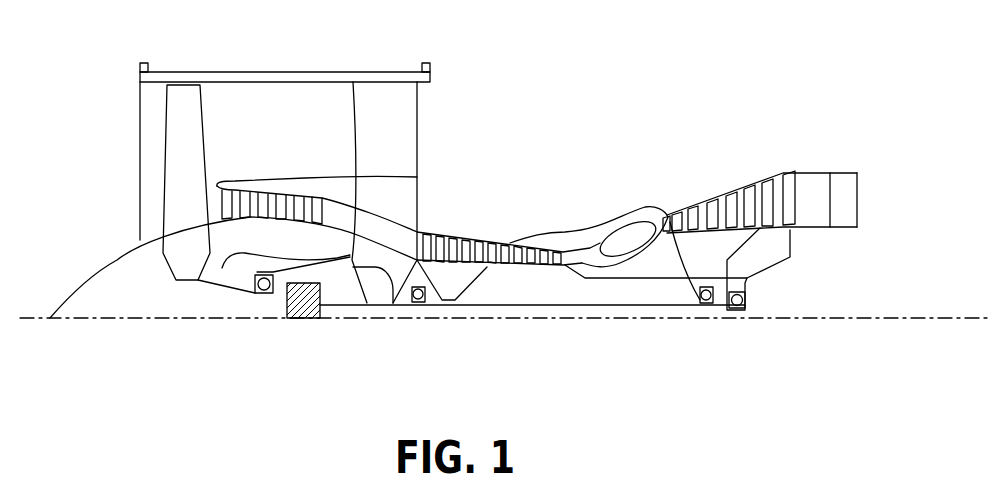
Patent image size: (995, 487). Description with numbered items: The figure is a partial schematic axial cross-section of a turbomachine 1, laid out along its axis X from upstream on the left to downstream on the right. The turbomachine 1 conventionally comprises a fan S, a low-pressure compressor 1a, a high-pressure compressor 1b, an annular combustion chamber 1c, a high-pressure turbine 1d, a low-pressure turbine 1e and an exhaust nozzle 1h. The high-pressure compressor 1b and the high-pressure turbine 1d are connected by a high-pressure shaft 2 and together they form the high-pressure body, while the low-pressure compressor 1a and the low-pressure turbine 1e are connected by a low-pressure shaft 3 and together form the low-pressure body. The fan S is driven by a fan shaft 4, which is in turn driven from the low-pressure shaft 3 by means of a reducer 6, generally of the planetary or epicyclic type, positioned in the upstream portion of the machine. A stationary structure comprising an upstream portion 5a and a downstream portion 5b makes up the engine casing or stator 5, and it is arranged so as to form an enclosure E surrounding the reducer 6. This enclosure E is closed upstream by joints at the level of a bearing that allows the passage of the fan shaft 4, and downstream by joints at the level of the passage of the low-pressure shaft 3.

The turbomachine 1 is at (545, 138).
The low-pressure compressor 1a is at (240, 192).
The high-pressure compressor 1b is at (452, 238).
The annular combustion chamber 1c is at (617, 240).
The high-pressure turbine 1d is at (667, 217).
The low-pressure turbine 1e is at (787, 188).
The exhaust nozzle 1h is at (845, 195).
The high-pressure shaft 2 is at (607, 278).
The low-pressure shaft 3 is at (517, 306).
The fan shaft 4 is at (243, 294).
The engine casing or stator 5 is at (337, 250).
The upstream portion 5a is at (222, 268).
The downstream portion 5b is at (393, 305).
The reducer 6 is at (302, 318).
The enclosure E is at (327, 283).
The fan S is at (177, 132).
The engine axis X is at (30, 320).